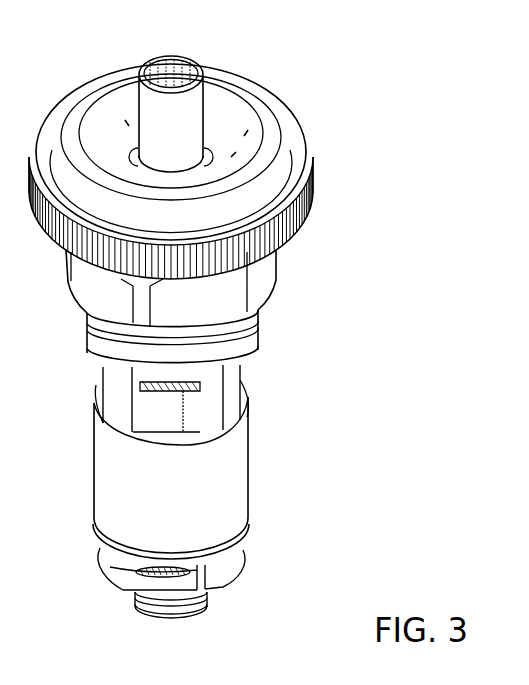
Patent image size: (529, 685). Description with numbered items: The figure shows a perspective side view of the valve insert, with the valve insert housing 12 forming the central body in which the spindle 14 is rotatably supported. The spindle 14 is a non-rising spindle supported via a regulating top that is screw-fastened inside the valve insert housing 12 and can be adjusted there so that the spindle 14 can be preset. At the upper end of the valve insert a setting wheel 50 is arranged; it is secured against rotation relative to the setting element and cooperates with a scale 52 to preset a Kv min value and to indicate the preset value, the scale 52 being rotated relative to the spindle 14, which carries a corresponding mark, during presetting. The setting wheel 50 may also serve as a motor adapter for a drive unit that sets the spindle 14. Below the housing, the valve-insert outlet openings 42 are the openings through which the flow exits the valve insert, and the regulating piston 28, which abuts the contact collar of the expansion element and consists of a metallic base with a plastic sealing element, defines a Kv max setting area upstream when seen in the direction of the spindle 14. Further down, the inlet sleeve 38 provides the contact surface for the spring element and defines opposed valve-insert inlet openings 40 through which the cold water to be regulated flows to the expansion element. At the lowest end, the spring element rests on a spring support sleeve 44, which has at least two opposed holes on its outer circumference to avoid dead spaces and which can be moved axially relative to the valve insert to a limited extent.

The valve insert housing 12 is at (262, 290).
The spindle 14 is at (205, 68).
The regulating piston 28 is at (203, 420).
The inlet sleeve 38 is at (237, 572).
The valve-insert inlet openings 40 is at (102, 562).
The valve-insert outlet openings 42 is at (99, 378).
The spring support sleeve 44 is at (195, 621).
The setting wheel 50 is at (302, 145).
The scale 52 is at (217, 122).